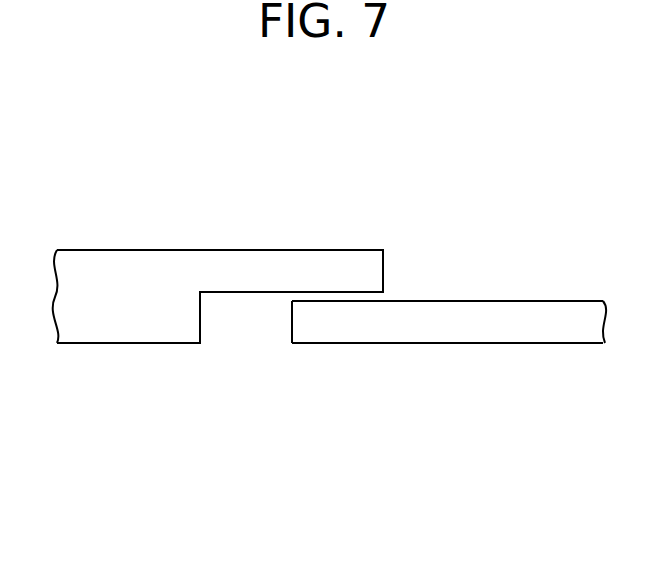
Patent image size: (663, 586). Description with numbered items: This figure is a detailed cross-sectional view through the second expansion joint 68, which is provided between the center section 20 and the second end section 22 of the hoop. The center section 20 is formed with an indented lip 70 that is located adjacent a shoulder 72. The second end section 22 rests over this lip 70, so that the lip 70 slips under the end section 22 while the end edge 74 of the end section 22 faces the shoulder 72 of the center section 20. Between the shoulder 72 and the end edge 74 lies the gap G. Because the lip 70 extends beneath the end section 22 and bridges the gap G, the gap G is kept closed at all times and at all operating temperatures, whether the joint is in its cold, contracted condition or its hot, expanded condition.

The center section 20 is at (127, 250).
The second end section 22 is at (418, 343).
The second expansion joint 68 is at (458, 259).
The indented lip 70 is at (333, 273).
The shoulder 72 is at (200, 320).
The end edge 74 is at (292, 322).
The gap G is at (245, 317).